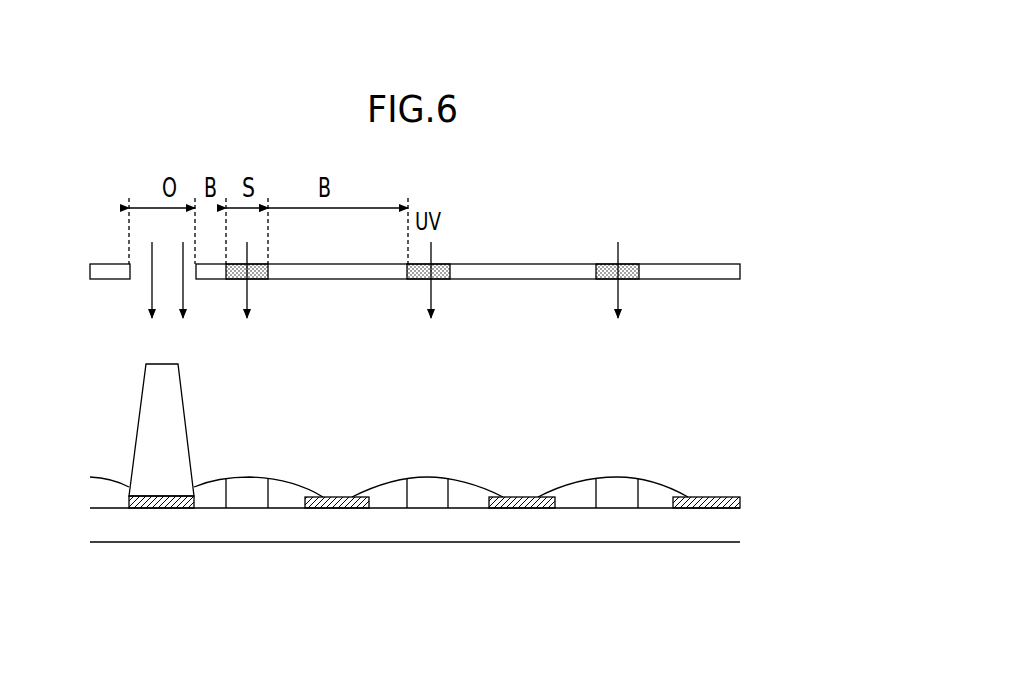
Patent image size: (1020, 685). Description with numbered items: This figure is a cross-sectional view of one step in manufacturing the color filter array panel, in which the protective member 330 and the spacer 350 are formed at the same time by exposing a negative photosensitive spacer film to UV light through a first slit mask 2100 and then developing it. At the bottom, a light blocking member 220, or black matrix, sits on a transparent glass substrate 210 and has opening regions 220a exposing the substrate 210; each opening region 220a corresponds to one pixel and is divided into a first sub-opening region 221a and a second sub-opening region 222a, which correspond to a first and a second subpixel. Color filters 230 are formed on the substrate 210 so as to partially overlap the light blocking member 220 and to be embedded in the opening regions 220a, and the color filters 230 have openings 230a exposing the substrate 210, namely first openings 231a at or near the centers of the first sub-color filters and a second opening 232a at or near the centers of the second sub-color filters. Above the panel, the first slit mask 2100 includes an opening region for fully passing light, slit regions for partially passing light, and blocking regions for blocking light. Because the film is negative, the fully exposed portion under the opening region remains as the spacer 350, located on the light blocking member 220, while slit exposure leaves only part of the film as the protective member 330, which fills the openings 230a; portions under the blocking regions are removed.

The first slit mask 2100 is at (684, 270).
The substrate 210 is at (305, 528).
The spacer 350 is at (150, 420).
The light blocking member 220 is at (149, 508).
The opening regions 220a is at (603, 594).
The first sub-opening region 221a is at (557, 503).
The second sub-opening region 222a is at (370, 503).
The color filters 230 is at (655, 497).
The openings 230a is at (497, 396).
The first openings 231a is at (595, 498).
The second opening 232a is at (416, 478).
The protective member 330 is at (243, 490).